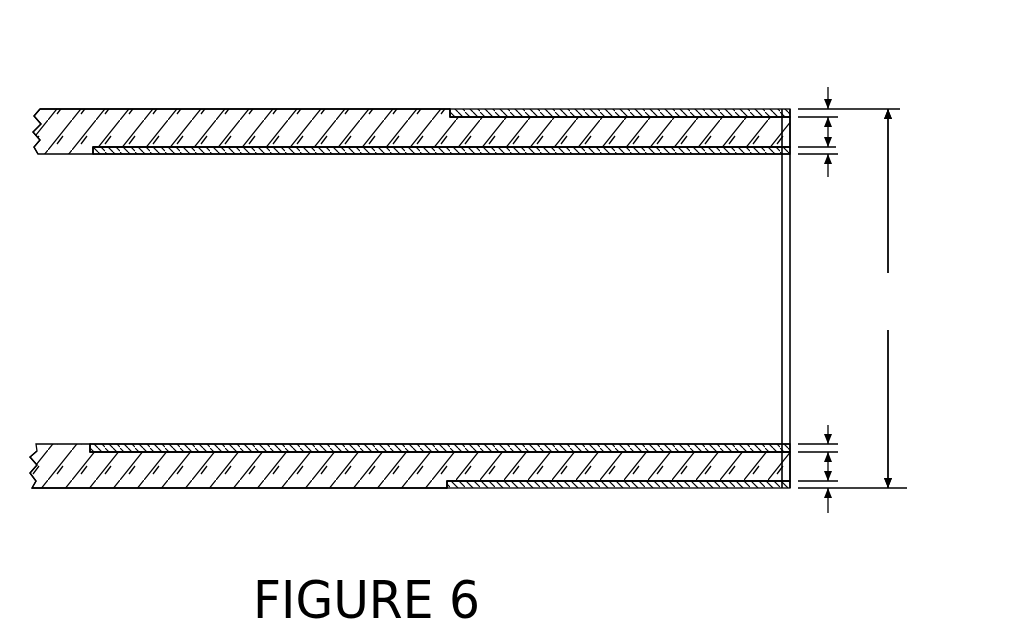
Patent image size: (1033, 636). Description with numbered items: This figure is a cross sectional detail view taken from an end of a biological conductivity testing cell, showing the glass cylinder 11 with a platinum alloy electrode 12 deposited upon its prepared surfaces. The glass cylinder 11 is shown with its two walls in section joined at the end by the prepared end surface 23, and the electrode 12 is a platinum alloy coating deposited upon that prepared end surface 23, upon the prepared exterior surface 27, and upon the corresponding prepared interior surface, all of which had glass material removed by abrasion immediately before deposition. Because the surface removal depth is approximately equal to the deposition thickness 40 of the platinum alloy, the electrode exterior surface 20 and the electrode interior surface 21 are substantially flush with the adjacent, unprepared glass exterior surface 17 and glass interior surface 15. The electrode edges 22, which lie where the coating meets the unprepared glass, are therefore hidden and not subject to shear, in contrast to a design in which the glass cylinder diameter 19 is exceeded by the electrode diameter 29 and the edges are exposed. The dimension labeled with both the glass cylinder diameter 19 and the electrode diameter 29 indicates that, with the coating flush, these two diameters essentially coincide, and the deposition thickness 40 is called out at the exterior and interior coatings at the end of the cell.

The glass cylinder 11 is at (228, 113).
The electrode 12 is at (690, 109).
The glass interior surface 15 is at (66, 154).
The glass exterior surface 17 is at (68, 109).
The glass cylinder diameter 19 is at (855, 298).
The electrode exterior surface 20 is at (583, 109).
The electrode interior surface 21 is at (658, 155).
The electrode edge 22 is at (446, 108).
The prepared end surface 23 is at (782, 295).
The prepared exterior surface 27 is at (308, 155).
The electrode diameter 29 is at (855, 298).
The deposition thickness 40 is at (806, 112).